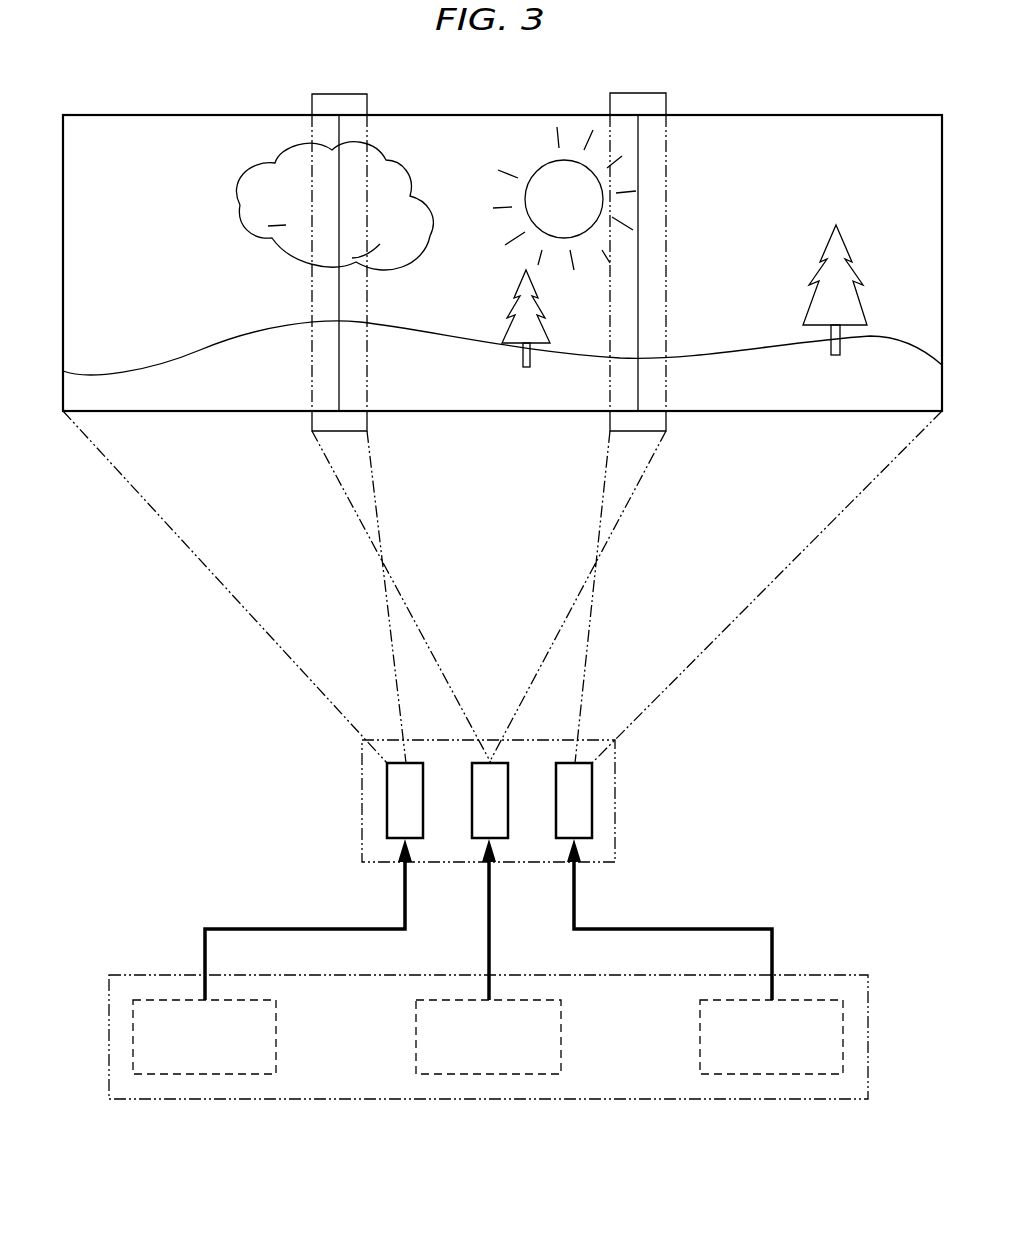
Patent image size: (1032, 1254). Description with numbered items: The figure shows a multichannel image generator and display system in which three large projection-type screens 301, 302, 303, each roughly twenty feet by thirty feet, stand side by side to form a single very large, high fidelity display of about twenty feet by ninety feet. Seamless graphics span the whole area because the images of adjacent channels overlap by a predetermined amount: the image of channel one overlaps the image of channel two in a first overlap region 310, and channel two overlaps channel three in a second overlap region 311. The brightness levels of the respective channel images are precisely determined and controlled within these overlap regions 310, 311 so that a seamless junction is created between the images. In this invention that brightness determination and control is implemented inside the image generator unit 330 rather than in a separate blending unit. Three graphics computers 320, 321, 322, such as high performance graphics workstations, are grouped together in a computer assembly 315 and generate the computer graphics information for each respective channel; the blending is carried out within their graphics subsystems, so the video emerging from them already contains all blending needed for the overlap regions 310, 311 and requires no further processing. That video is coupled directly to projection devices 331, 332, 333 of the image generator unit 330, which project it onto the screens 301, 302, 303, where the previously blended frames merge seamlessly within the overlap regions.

The first projection-type screen 301 is at (120, 115).
The second projection-type screen 302 is at (487, 115).
The third projection-type screen 303 is at (885, 115).
The first overlap region 310 is at (330, 94).
The second overlap region 311 is at (650, 93).
The graphics computer assembly 315 is at (109, 1006).
The first graphics computer 320 is at (276, 1028).
The second graphics computer 321 is at (561, 1028).
The third graphics computer 322 is at (700, 1045).
The image generator unit 330 is at (362, 768).
The first projector 331 is at (387, 808).
The second projector 332 is at (508, 788).
The third projector 333 is at (592, 808).